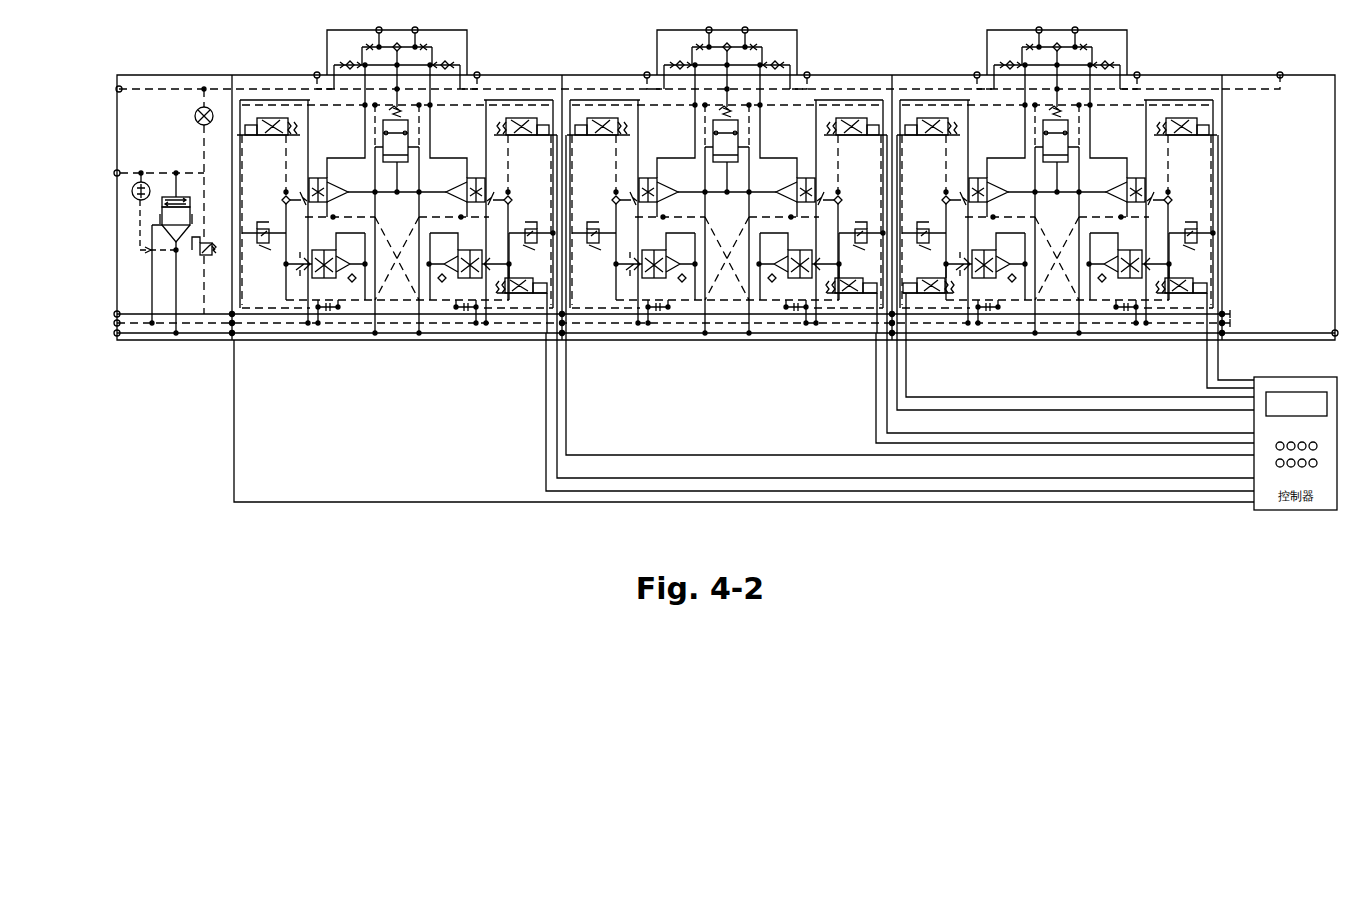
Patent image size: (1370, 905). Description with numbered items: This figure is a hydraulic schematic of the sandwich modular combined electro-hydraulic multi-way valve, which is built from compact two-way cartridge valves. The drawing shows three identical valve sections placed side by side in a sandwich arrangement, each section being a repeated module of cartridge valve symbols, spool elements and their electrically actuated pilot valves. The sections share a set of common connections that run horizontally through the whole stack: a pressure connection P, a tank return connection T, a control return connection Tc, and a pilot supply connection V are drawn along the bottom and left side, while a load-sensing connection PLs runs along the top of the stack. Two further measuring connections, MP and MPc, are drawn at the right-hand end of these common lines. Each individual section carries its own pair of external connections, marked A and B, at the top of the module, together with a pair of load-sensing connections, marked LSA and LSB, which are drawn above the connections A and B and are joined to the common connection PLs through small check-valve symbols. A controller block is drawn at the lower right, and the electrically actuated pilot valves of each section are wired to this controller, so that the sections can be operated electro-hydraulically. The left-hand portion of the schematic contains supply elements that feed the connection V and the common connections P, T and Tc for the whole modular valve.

The load sensing pressure port PLs is at (653, 88).
The pilot pressure measuring port MPc is at (1252, 74).
The pressure measuring port MP is at (1345, 333).
The pilot supply port V is at (150, 175).
The control return port Tc is at (661, 313).
The tank return port T is at (664, 323).
The pump pressure port P is at (717, 334).
The load sensing port A LSA is at (694, 24).
The load sensing port B LSB is at (758, 24).
The working port A is at (640, 69).
The working port B is at (813, 69).